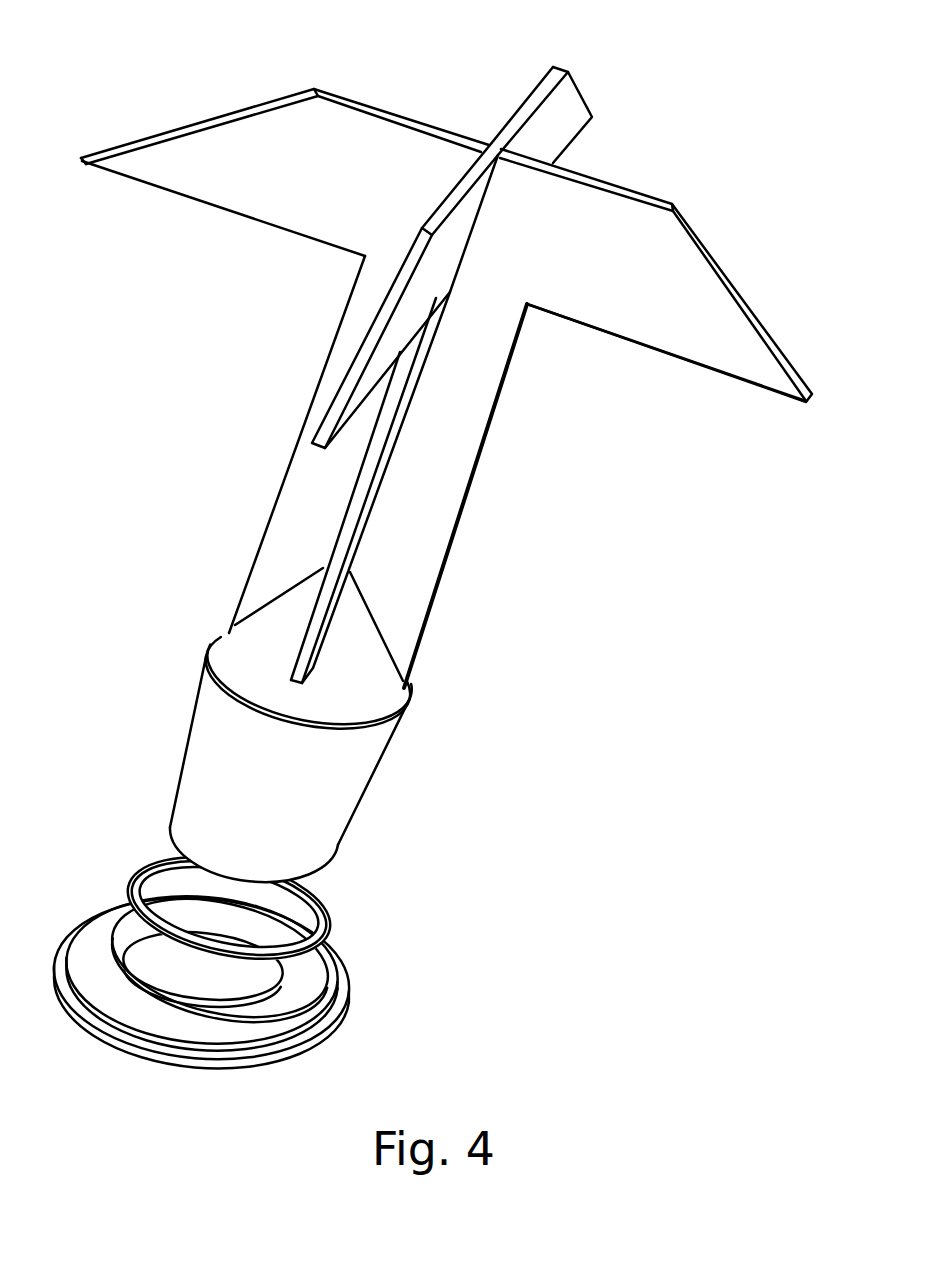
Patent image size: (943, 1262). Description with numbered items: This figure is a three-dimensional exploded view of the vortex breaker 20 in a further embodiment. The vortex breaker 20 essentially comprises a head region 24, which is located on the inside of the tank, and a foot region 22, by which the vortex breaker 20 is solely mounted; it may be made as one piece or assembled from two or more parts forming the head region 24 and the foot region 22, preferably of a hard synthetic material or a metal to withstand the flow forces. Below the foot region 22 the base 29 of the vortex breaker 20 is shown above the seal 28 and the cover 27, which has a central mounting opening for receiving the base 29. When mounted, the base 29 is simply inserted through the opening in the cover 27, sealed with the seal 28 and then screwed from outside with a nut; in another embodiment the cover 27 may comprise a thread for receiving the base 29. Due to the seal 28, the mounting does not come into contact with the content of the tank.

The vortex breaker 20 is at (490, 148).
The foot region 22 is at (453, 417).
The head region 24 is at (603, 240).
The cover 27 is at (321, 998).
The seal 28 is at (332, 924).
The base 29 is at (345, 675).